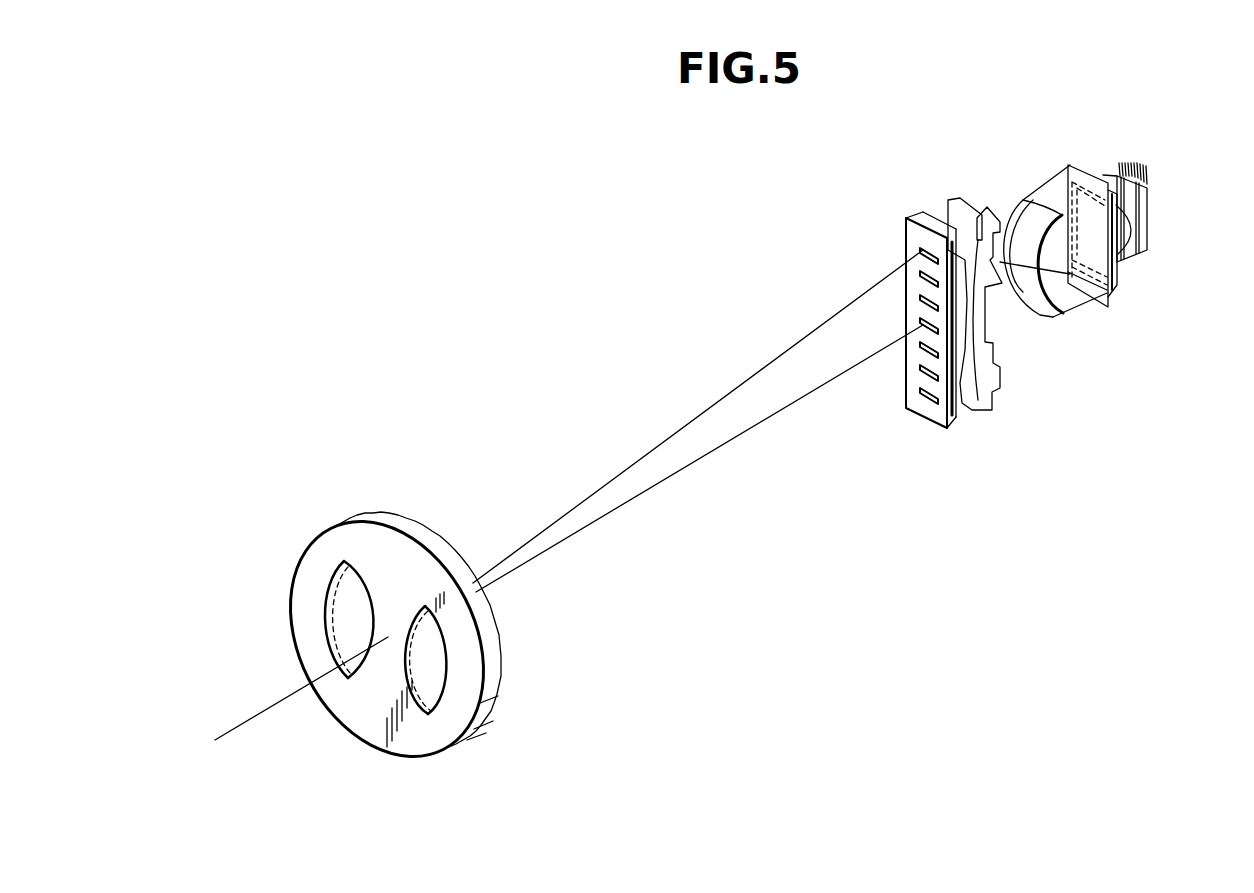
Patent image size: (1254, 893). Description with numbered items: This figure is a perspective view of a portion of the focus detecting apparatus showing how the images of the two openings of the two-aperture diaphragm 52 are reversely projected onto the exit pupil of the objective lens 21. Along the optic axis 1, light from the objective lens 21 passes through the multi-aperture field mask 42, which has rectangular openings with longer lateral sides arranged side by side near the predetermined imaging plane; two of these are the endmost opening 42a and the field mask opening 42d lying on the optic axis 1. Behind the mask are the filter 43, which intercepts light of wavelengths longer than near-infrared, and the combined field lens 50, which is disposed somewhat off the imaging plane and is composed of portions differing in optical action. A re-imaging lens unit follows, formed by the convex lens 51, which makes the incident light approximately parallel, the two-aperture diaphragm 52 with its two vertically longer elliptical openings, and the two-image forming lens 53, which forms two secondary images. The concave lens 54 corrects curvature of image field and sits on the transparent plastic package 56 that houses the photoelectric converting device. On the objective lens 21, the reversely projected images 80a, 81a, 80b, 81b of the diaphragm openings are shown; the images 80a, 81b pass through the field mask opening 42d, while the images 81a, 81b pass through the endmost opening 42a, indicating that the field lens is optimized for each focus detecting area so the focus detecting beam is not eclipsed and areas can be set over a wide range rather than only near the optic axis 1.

The optic axis 1 is at (252, 721).
The objective lens 21 is at (487, 675).
The reversely projected image of diaphragm opening 80a is at (382, 740).
The reversely projected image of diaphragm opening 80b is at (337, 657).
The reversely projected image of diaphragm opening 81a is at (440, 615).
The reversely projected image of diaphragm opening 81b is at (343, 563).
The multi-aperture field mask 42 is at (932, 420).
The endmost opening 42a is at (923, 250).
The field mask opening 42d is at (920, 321).
The filter 43 is at (955, 413).
The combined field lens 50 is at (997, 385).
The convex lens 51 is at (1073, 305).
The two-aperture diaphragm 52 is at (1107, 300).
The two-image forming lens 53 is at (1115, 270).
The concave lens 54 is at (1150, 240).
The transparent plastic package 56 is at (1150, 210).